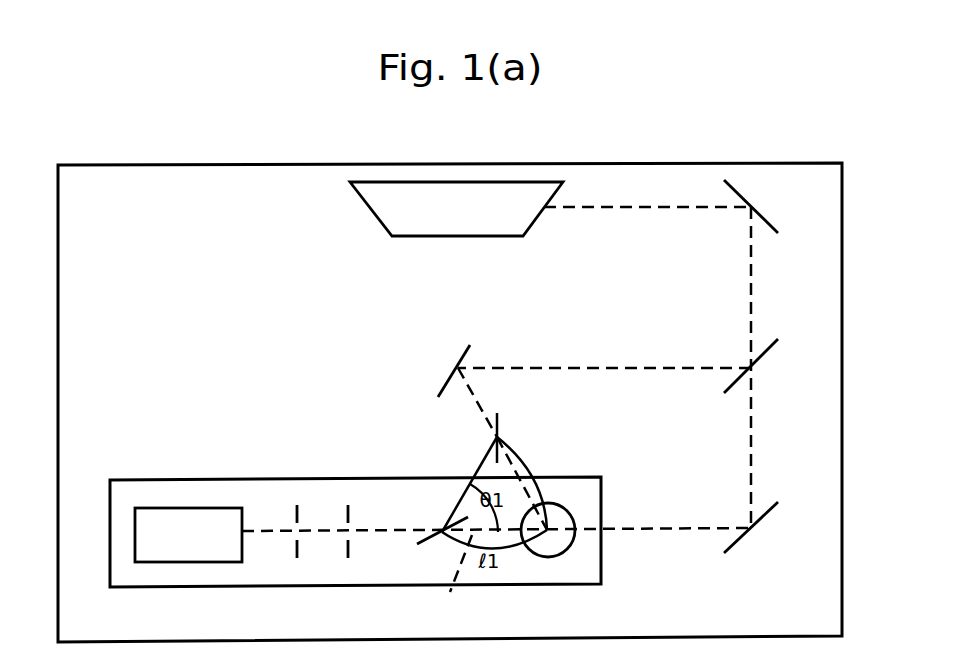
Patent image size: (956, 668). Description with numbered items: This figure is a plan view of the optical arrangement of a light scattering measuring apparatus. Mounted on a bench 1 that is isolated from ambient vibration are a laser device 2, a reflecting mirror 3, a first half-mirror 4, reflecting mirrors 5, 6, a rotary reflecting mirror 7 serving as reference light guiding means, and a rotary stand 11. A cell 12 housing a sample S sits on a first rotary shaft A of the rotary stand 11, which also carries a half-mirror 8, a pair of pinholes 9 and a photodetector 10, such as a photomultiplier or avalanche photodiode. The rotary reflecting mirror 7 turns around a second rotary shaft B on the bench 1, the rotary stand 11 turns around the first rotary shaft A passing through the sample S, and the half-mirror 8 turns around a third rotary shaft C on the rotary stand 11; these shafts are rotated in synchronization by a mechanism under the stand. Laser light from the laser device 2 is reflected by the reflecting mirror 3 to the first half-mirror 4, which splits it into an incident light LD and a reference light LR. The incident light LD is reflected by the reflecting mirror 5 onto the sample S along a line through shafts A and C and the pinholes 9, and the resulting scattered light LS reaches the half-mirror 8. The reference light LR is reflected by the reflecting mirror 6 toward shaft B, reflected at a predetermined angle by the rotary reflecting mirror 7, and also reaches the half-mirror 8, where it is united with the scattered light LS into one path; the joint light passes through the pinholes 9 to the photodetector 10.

The bench 1 is at (222, 190).
The laser device 2 is at (520, 190).
The reflecting mirror 3 is at (767, 220).
The first half-mirror 4 is at (772, 348).
The reflecting mirror 5 is at (733, 548).
The reflecting mirror 6 is at (465, 352).
The rotary reflecting mirror 7 is at (500, 415).
The half-mirror 8 is at (420, 547).
The pair of pinholes 9 is at (300, 510).
The photodetector 10 is at (207, 508).
The rotary stand 11 is at (293, 588).
The cell 12 is at (572, 546).
The first rotary shaft A is at (550, 528).
The second rotary shaft B is at (497, 437).
The third rotary shaft C is at (442, 532).
The sample S is at (557, 505).
The reference light LR is at (637, 368).
The incident light LD is at (753, 443).
The scattered light LS is at (453, 610).